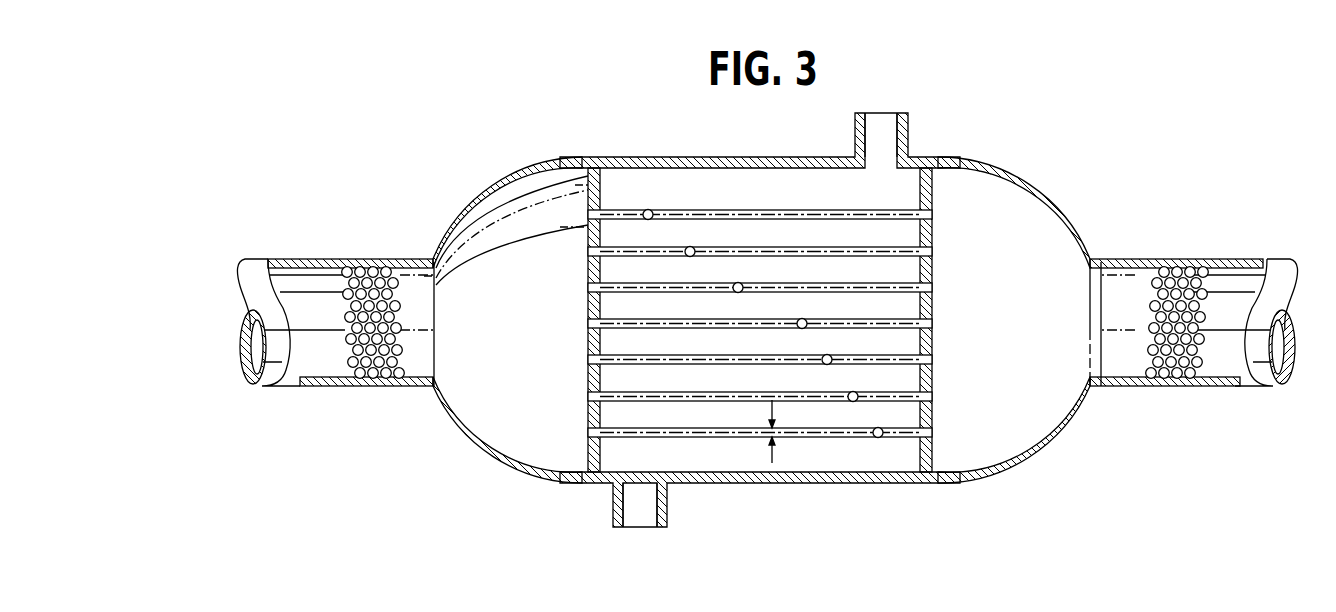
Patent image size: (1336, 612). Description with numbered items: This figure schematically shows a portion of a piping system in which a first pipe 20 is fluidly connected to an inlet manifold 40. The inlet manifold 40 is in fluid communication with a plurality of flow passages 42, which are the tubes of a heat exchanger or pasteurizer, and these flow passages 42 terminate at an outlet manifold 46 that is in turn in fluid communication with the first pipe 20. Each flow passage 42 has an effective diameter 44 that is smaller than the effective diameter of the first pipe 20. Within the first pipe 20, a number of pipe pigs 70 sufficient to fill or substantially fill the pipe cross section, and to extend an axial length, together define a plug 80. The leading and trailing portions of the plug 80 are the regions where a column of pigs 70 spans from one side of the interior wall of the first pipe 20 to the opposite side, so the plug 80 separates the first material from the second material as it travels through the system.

The first pipe 20 is at (322, 259).
The inlet manifold 40 is at (500, 424).
The outlet manifold 46 is at (1052, 398).
The flow passages 42 is at (737, 434).
The effective diameter 44 is at (786, 436).
The pipe pigs 70 is at (651, 211).
The plug 80 is at (368, 378).